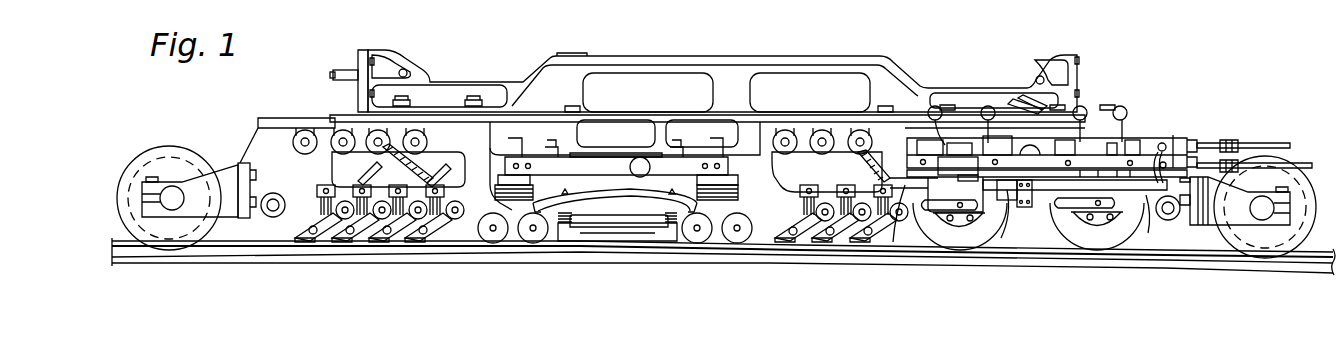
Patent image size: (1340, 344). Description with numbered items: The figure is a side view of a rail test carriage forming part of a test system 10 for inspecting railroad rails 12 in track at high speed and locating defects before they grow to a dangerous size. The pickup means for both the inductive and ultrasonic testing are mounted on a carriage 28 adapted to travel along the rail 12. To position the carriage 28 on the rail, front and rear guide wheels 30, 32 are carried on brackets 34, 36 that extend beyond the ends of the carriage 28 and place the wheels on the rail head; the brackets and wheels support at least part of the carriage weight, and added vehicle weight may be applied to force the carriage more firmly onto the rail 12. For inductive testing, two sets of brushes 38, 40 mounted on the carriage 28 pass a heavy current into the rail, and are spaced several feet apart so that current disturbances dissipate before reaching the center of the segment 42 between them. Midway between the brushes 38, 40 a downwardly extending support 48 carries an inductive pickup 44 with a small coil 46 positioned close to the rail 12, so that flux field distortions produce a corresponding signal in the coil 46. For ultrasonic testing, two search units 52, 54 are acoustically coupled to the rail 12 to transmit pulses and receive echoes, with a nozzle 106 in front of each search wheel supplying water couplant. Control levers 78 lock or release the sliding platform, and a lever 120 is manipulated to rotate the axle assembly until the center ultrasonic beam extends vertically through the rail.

The test system 10 is at (728, 296).
The rails 12 is at (296, 263).
The carriage 28 is at (898, 66).
The front guide wheel 30 is at (188, 150).
The rear guide wheel 32 is at (1308, 172).
The bracket 34 is at (228, 173).
The bracket 36 is at (1228, 195).
The set of brushes 38 is at (868, 243).
The set of brushes 40 is at (425, 240).
The segment 42 is at (607, 257).
The inductive pickup 44 is at (668, 243).
The coil 46 is at (570, 243).
The support 48 is at (680, 173).
The search unit 52 is at (1131, 245).
The search unit 54 is at (993, 245).
The control levers 78 is at (989, 106).
The nozzle 106 is at (1003, 232).
The lever 120 is at (937, 212).